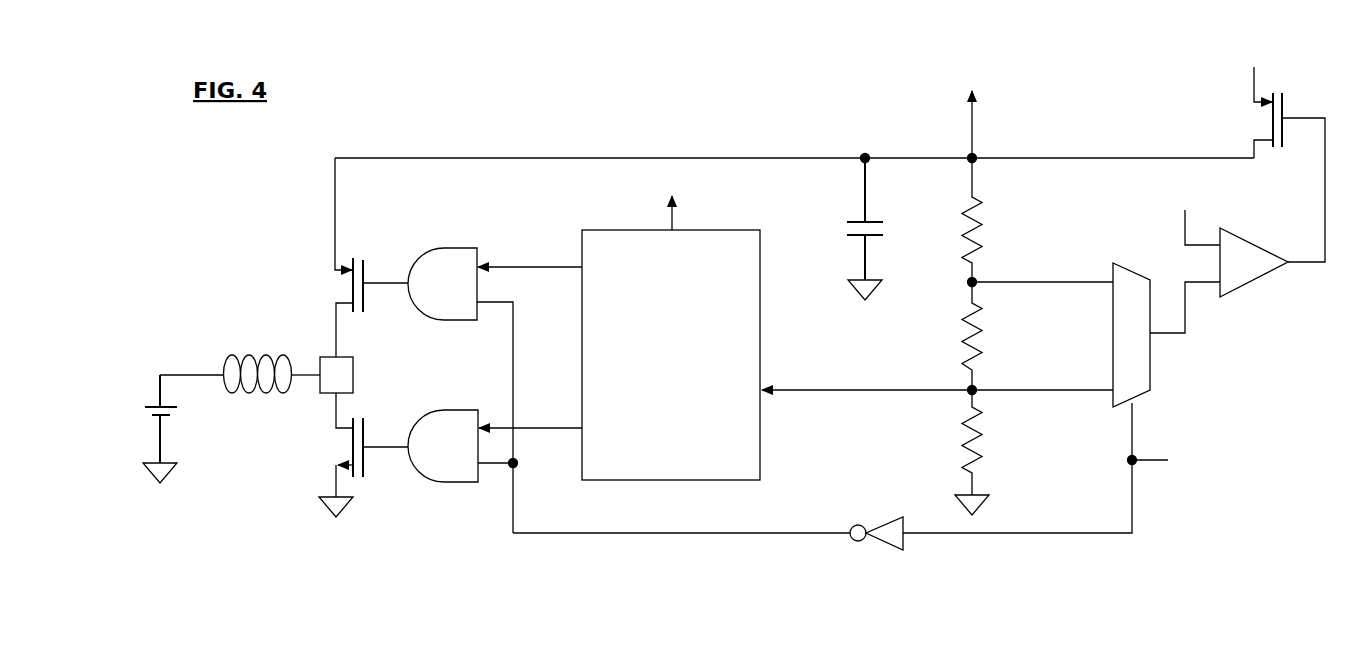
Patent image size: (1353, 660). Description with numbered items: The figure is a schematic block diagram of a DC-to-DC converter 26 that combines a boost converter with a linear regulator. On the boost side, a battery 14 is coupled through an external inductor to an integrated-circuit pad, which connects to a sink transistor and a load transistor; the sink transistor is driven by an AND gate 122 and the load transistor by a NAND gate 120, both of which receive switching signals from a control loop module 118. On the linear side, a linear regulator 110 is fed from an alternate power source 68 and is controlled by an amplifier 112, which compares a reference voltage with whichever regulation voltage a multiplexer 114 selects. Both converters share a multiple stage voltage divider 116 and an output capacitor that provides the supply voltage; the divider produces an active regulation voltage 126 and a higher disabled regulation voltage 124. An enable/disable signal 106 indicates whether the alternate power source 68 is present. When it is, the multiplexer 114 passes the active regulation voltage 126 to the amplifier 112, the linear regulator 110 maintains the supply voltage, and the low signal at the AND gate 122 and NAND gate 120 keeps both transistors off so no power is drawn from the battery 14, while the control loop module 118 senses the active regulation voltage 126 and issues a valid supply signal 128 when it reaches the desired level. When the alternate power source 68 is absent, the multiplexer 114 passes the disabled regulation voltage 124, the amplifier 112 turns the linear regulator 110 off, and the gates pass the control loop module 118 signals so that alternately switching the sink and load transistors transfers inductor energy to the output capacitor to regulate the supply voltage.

The battery 14 is at (137, 403).
The DC-to-DC converter 26 is at (719, 282).
The alternate power source 68 is at (1254, 53).
The enable/disable signal 106 is at (856, 460).
The linear regulator 110 is at (1194, 125).
The amplifier 112 is at (1251, 222).
The multiplexer 114 is at (1166, 335).
The multiple stage voltage divider 116 is at (946, 411).
The control loop module 118 is at (671, 355).
The NAND gate 120 is at (495, 390).
The AND gate 122 is at (495, 446).
The disabled regulation voltage 124 is at (1043, 277).
The active regulation voltage 126 is at (793, 386).
The valid supply signal 128 is at (671, 198).